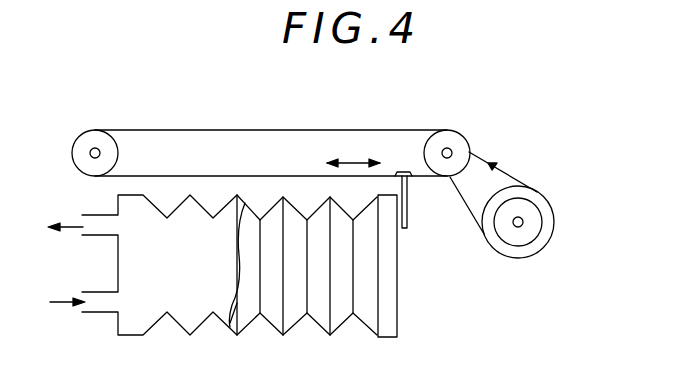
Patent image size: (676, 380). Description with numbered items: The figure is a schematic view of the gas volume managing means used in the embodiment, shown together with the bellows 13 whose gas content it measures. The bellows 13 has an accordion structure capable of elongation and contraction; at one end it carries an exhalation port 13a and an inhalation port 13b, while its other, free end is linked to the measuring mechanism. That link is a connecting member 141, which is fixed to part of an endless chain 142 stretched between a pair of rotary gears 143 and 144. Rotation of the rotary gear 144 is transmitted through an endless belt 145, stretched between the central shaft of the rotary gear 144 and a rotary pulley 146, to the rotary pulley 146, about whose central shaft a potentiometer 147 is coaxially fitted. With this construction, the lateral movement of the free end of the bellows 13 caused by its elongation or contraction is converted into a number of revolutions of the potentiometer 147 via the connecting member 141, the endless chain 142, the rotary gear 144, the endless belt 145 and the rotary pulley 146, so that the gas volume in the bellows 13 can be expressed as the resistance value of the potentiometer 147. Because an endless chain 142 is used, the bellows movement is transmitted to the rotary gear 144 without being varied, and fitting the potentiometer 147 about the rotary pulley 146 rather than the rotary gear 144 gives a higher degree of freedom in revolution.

The bellows 13 is at (387, 317).
The exhalation port 13a is at (108, 223).
The inhalation port 13b is at (107, 303).
The connecting member 141 is at (403, 195).
The endless chain 142 is at (244, 131).
The rotary gear 143 is at (90, 138).
The rotary gear 144 is at (455, 143).
The endless belt 145 is at (498, 163).
The rotary pulley 146 is at (549, 225).
The potentiometer 147 is at (518, 235).